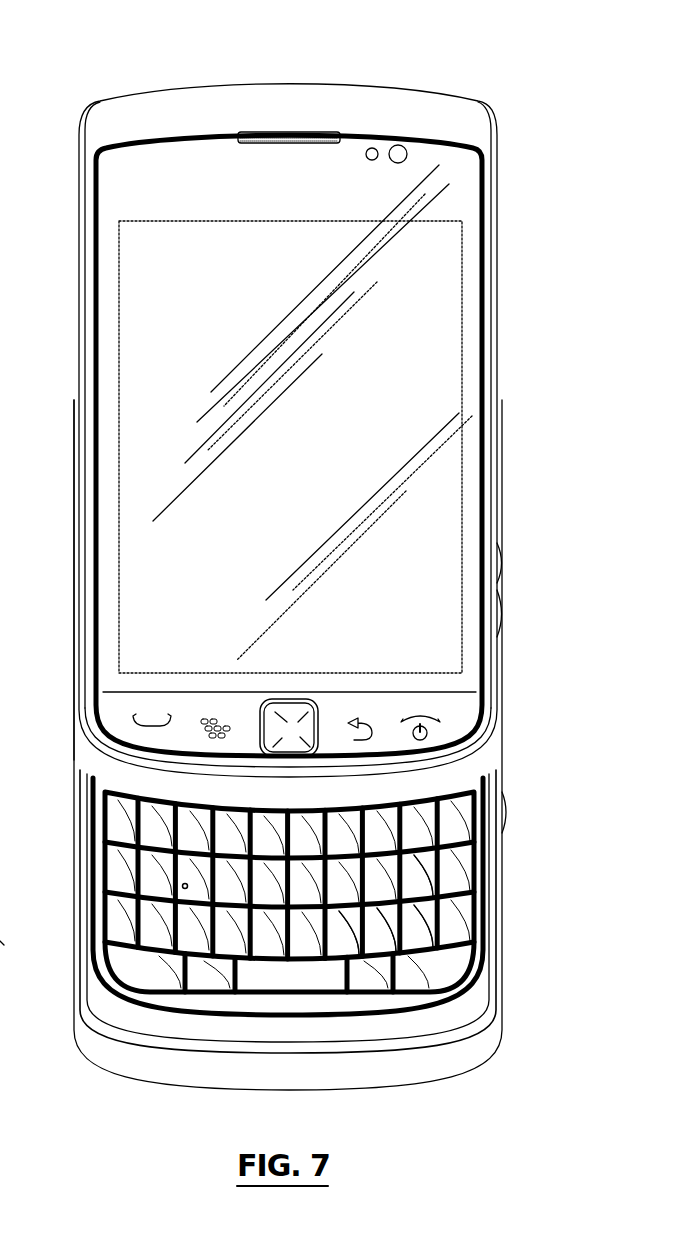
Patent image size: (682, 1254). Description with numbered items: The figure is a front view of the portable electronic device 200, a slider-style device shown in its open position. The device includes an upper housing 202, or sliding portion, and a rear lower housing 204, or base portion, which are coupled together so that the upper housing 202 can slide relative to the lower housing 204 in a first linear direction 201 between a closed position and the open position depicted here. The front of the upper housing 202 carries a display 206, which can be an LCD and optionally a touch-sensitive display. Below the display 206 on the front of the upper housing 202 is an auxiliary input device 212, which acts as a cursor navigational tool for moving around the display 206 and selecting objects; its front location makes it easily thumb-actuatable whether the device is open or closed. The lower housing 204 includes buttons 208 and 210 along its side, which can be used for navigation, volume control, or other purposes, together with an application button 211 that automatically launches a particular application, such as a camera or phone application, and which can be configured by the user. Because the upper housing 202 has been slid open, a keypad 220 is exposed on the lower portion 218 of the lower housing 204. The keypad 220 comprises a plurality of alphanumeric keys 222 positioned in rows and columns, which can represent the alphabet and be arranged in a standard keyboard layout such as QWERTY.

The portable electronic device 200 is at (240, 58).
The first linear direction 201 is at (37, 580).
The upper housing 202 is at (125, 118).
The lower housing 204 is at (72, 765).
The display 206 is at (428, 336).
The button 208 is at (500, 563).
The button 210 is at (500, 627).
The application button 211 is at (504, 817).
The auxiliary input device 212 is at (318, 756).
The lower portion 218 is at (58, 908).
The keypad 220 is at (427, 877).
The alphanumeric keys 222 is at (343, 927).